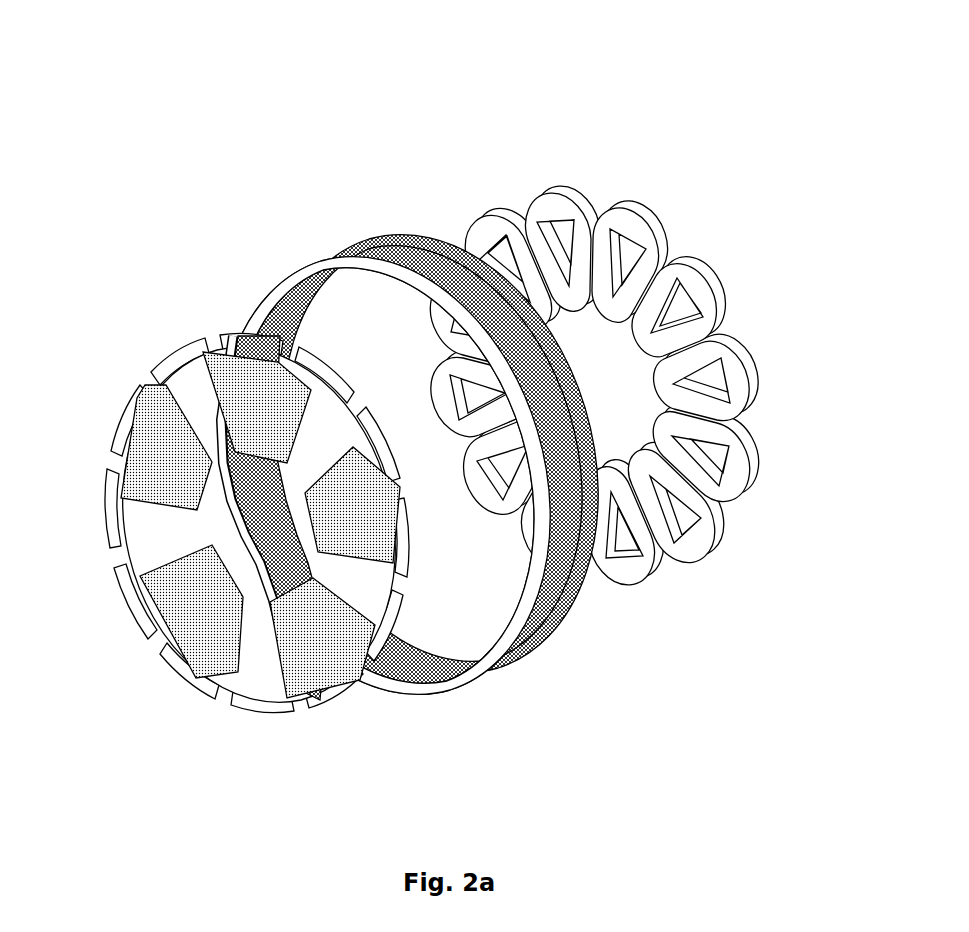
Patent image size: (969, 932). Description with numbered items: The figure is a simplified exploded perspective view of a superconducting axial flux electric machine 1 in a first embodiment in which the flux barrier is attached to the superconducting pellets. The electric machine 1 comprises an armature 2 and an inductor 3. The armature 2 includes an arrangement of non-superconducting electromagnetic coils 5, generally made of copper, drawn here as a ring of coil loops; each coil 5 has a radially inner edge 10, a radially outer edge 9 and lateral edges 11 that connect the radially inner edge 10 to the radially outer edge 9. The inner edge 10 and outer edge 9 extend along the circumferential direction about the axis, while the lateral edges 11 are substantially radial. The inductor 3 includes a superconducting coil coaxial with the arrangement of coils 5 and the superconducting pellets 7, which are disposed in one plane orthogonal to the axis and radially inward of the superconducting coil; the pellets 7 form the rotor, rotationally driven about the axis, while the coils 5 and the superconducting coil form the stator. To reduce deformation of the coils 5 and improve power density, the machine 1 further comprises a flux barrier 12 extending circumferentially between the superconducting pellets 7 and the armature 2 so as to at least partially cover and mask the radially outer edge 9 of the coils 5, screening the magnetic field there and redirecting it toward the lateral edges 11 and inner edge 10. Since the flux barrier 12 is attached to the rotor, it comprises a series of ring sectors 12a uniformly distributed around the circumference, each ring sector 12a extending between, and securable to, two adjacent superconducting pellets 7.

The superconducting axial flux electric machine 1 is at (449, 447).
The armature 2 is at (606, 342).
The inductor 3 is at (318, 236).
The electromagnetic coils 5 is at (490, 221).
The superconducting pellets 7 is at (235, 564).
The radially outer edge 9 is at (706, 280).
The radially inner edge 10 is at (646, 341).
The lateral edges 11 is at (662, 275).
The flux barrier 12 is at (236, 564).
The ring sectors 12a is at (328, 701).